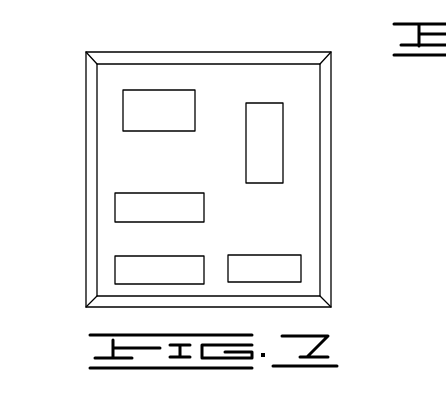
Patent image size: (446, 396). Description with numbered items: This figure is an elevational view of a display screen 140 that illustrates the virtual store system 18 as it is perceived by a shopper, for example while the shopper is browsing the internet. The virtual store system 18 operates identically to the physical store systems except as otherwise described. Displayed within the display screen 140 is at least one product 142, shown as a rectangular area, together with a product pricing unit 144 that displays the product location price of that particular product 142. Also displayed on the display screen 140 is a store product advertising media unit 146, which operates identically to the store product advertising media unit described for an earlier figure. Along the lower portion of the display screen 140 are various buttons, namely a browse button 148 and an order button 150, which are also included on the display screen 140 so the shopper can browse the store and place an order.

The virtual store system 18 is at (256, 155).
The display screen 140 is at (332, 213).
The product 142 is at (283, 135).
The product pricing unit 144 is at (115, 205).
The store product advertising media unit 146 is at (123, 102).
The browse button 148 is at (115, 270).
The order button 150 is at (301, 262).